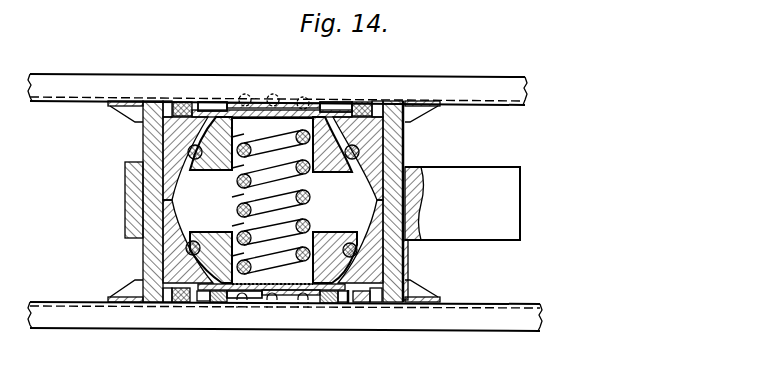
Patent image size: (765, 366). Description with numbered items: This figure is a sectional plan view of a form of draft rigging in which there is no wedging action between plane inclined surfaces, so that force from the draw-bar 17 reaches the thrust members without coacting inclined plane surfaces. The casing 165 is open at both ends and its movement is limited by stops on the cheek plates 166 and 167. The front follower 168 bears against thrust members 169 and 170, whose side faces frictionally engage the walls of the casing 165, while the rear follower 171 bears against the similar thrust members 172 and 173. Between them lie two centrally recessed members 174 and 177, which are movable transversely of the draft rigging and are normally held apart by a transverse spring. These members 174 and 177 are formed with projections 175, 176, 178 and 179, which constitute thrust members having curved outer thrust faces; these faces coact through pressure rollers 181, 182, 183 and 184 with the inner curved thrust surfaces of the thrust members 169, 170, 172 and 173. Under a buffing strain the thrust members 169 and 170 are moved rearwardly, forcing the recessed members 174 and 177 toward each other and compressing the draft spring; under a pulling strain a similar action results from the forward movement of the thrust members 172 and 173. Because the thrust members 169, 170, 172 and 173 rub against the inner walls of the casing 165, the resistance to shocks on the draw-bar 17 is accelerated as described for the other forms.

The draw-bar 17 is at (520, 168).
The casing 165 is at (364, 107).
The cheek plate 166 is at (291, 112).
The cheek plate 167 is at (294, 298).
The front follower 168 is at (400, 158).
The thrust member 169 is at (424, 186).
The thrust member 170 is at (380, 214).
The rear follower 171 is at (143, 152).
The thrust member 172 is at (175, 140).
The thrust member 173 is at (175, 255).
The centrally recessed member 174 is at (286, 124).
The projection 175 is at (208, 170).
The projection 176 is at (338, 172).
The centrally recessed member 177 is at (258, 300).
The projection 178 is at (218, 300).
The projection 179 is at (344, 300).
The pressure roller 181 is at (398, 143).
The pressure roller 182 is at (390, 255).
The pressure roller 183 is at (213, 112).
The pressure roller 184 is at (182, 300).